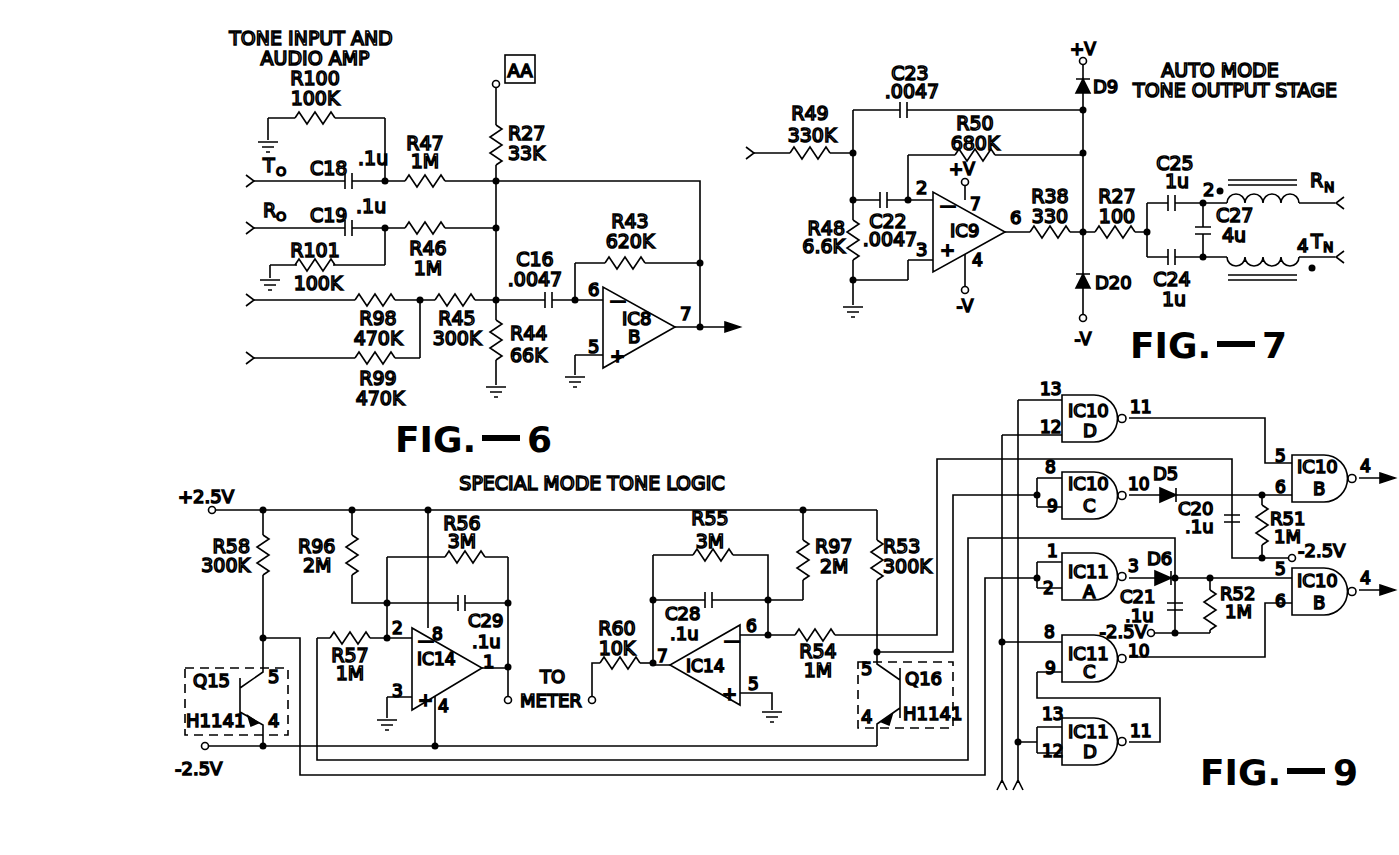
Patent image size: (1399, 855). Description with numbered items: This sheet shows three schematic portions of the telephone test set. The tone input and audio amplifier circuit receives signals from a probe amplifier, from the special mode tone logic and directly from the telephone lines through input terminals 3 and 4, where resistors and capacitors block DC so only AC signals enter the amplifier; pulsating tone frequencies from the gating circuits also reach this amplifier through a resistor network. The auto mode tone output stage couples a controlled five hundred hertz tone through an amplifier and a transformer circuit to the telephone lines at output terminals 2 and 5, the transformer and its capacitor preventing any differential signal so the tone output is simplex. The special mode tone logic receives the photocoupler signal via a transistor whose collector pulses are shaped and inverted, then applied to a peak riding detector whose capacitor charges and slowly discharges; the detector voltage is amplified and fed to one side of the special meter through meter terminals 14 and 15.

In FIG. 7, the tone output terminal to transformer (ring) 2 is at (1344, 201).
In FIG. 6, the tone input terminal 3 is at (276, 181).
In FIG. 6, the audio input terminal 4 is at (276, 228).
In FIG. 7, the tone output terminal to transformer (tip) 5 is at (1344, 255).
In FIG. 9, the meter connection terminal 14 is at (592, 703).
In FIG. 9, the meter connection terminal 15 is at (507, 720).